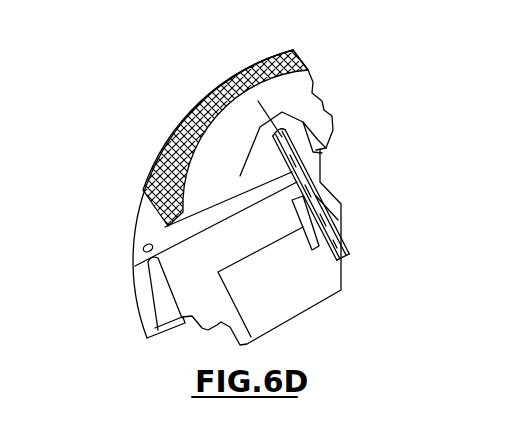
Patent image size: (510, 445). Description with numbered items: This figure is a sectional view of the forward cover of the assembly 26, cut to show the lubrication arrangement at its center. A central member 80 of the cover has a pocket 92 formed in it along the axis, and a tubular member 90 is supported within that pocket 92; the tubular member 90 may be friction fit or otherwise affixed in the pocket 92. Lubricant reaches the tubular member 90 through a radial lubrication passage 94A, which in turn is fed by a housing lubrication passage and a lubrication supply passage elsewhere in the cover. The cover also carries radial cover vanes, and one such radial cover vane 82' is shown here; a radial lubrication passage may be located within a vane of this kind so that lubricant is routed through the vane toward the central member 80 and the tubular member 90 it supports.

The drum assembly 26 is at (122, 160).
The radial lubrication passage 94A is at (218, 200).
The pocket 92 is at (328, 103).
The central member 80 is at (307, 155).
The tubular member 90 is at (343, 262).
The radial cover vane 82' is at (268, 266).